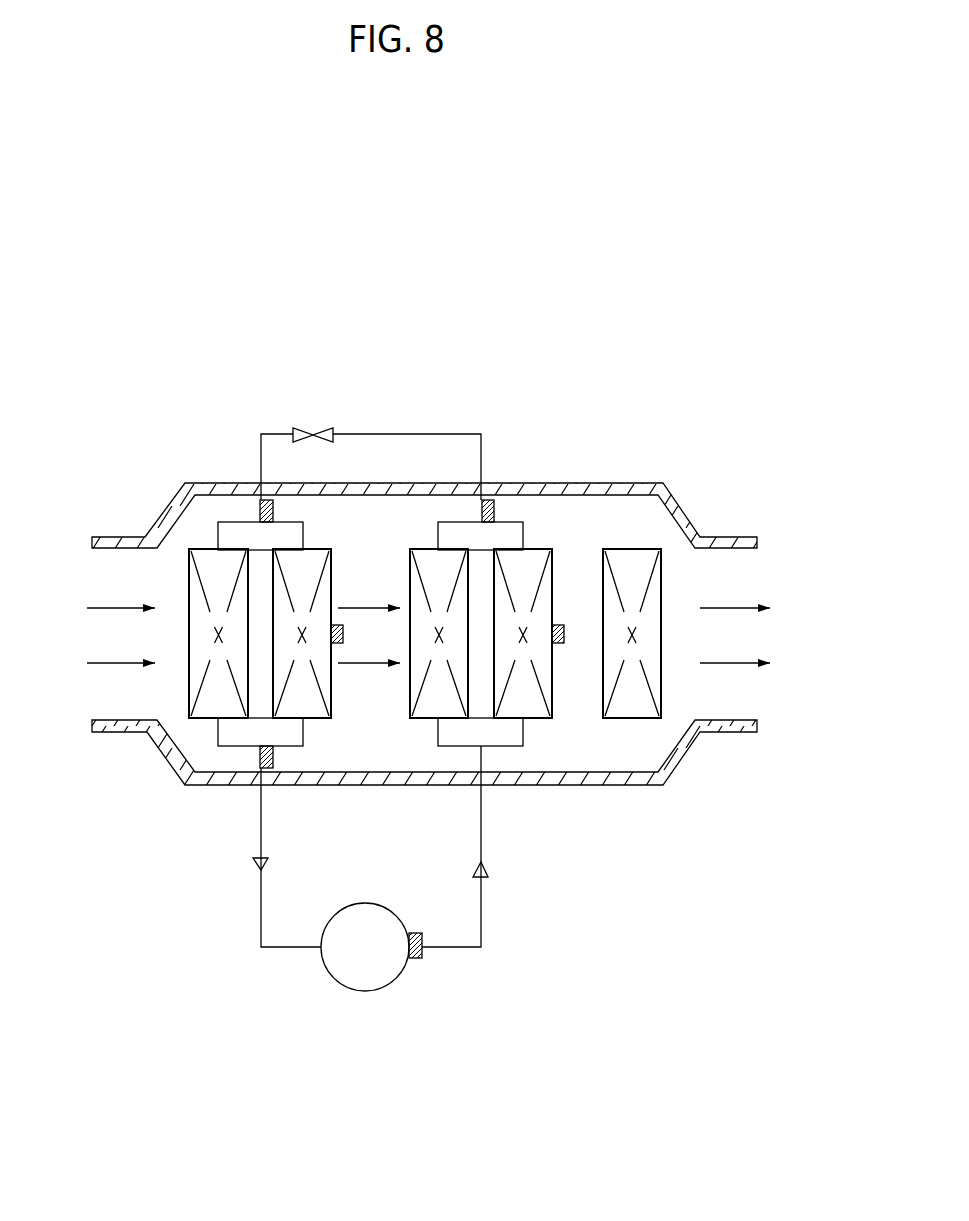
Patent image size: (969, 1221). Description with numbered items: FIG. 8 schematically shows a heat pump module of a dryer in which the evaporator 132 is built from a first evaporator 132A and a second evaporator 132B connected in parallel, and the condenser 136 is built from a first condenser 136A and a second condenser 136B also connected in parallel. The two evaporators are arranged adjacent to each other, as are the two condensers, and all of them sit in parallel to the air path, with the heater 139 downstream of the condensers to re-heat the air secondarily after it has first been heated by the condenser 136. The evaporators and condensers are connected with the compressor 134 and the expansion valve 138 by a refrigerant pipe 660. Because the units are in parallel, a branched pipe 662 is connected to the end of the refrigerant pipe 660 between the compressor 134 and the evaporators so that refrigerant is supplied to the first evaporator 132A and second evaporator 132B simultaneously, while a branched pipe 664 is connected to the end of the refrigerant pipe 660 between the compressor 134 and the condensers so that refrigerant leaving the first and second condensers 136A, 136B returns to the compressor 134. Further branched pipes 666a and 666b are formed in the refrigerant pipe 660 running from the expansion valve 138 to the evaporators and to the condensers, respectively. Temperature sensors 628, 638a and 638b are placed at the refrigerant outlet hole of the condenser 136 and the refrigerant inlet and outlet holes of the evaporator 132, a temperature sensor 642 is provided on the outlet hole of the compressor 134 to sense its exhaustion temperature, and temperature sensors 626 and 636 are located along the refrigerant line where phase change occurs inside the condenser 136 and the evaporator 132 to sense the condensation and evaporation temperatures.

The evaporator 132 is at (214, 736).
The first evaporator 132A is at (202, 704).
The second evaporator 132B is at (297, 705).
The compressor 134 is at (375, 992).
The condenser 136 is at (536, 736).
The first condenser 136A is at (448, 704).
The second condenser 136B is at (543, 705).
The expansion valve 138 is at (318, 428).
The heater 139 is at (640, 565).
The temperature sensor 626 is at (563, 626).
The temperature sensor 628 is at (494, 505).
The temperature sensor 636 is at (338, 625).
The temperature sensor 638a is at (261, 512).
The temperature sensor 638b is at (273, 755).
The temperature sensor 642 is at (423, 953).
The refrigerant pipe 660 is at (463, 948).
The branched pipe 662 is at (305, 735).
The branched pipe 664 is at (440, 746).
The branched pipe 666a is at (218, 535).
The branched pipe 666b is at (523, 535).